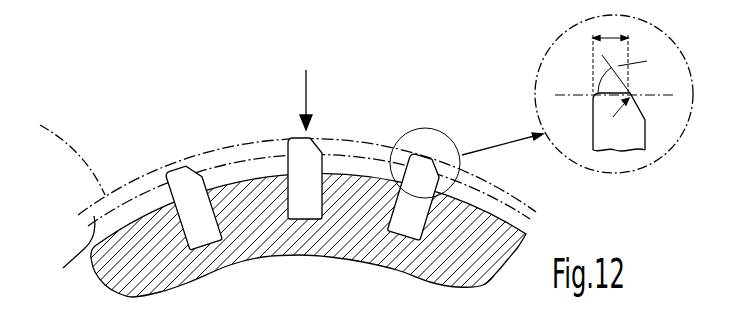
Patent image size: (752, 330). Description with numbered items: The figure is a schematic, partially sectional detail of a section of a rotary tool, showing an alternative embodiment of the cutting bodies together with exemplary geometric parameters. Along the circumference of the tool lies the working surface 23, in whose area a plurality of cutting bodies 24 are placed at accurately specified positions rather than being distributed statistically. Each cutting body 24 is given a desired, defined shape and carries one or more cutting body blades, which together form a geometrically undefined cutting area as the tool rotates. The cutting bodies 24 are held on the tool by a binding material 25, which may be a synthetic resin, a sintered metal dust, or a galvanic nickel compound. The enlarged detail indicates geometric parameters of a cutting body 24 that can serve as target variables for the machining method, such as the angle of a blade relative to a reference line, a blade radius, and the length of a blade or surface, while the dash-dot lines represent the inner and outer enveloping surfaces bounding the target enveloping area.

The working surface 23 is at (379, 104).
The cutting body 24 is at (187, 187).
The binding material 25 is at (255, 237).